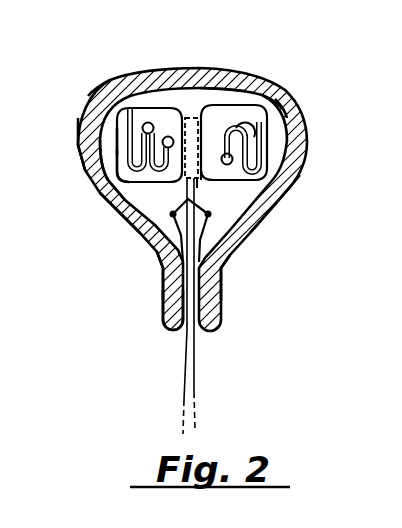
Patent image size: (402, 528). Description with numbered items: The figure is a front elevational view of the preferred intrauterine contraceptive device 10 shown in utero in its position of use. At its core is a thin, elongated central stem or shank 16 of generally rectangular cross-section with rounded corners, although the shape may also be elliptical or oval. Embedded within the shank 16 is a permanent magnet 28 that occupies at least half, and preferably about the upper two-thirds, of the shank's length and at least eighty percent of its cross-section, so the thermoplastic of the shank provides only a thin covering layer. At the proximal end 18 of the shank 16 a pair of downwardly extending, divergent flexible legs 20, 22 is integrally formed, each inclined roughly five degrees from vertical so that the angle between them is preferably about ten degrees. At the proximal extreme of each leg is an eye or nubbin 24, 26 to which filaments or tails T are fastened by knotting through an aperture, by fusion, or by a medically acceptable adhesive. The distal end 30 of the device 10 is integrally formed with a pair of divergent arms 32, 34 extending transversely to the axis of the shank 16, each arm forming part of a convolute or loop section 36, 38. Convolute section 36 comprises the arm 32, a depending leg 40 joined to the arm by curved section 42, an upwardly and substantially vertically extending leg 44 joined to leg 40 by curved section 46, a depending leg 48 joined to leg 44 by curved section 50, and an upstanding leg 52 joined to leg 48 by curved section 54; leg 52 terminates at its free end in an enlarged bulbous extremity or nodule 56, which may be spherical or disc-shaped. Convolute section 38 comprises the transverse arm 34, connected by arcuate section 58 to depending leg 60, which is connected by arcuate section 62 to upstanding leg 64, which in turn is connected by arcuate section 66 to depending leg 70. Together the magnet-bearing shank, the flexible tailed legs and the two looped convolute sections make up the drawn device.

The intrauterine contraceptive device 10 is at (137, 232).
The central stem or shank 16 is at (201, 158).
The proximal end of the shank 18 is at (197, 183).
The flexible leg 20 is at (211, 216).
The flexible leg 22 is at (162, 244).
The eye or nubbin 24 is at (233, 243).
The eye or nubbin 26 is at (162, 274).
The permanent magnet 28 is at (236, 130).
The distal end of the intrauterine device 30 is at (192, 118).
The divergent arm 32 is at (152, 132).
The divergent arm 34 is at (223, 100).
The convolute or loop section 36 is at (92, 124).
The convolute or loop section 38 is at (274, 123).
The depending leg 40 is at (100, 140).
The curved section 42 is at (102, 86).
The upwardly extending leg 44 is at (124, 153).
The curved section 46 is at (118, 172).
The depending leg 48 is at (124, 193).
The curved section 50 is at (142, 130).
The upstanding leg 52 is at (177, 187).
The curved section 54 is at (126, 206).
The bulbous extremity or nodule 56 is at (168, 136).
The arcuate section 58 is at (268, 106).
The depending leg 60 is at (272, 167).
The arcuate section 62 is at (287, 186).
The upstanding leg 64 is at (247, 153).
The arcuate section 66 is at (238, 127).
The depending leg 70 is at (224, 154).
The filaments or tails T is at (196, 389).